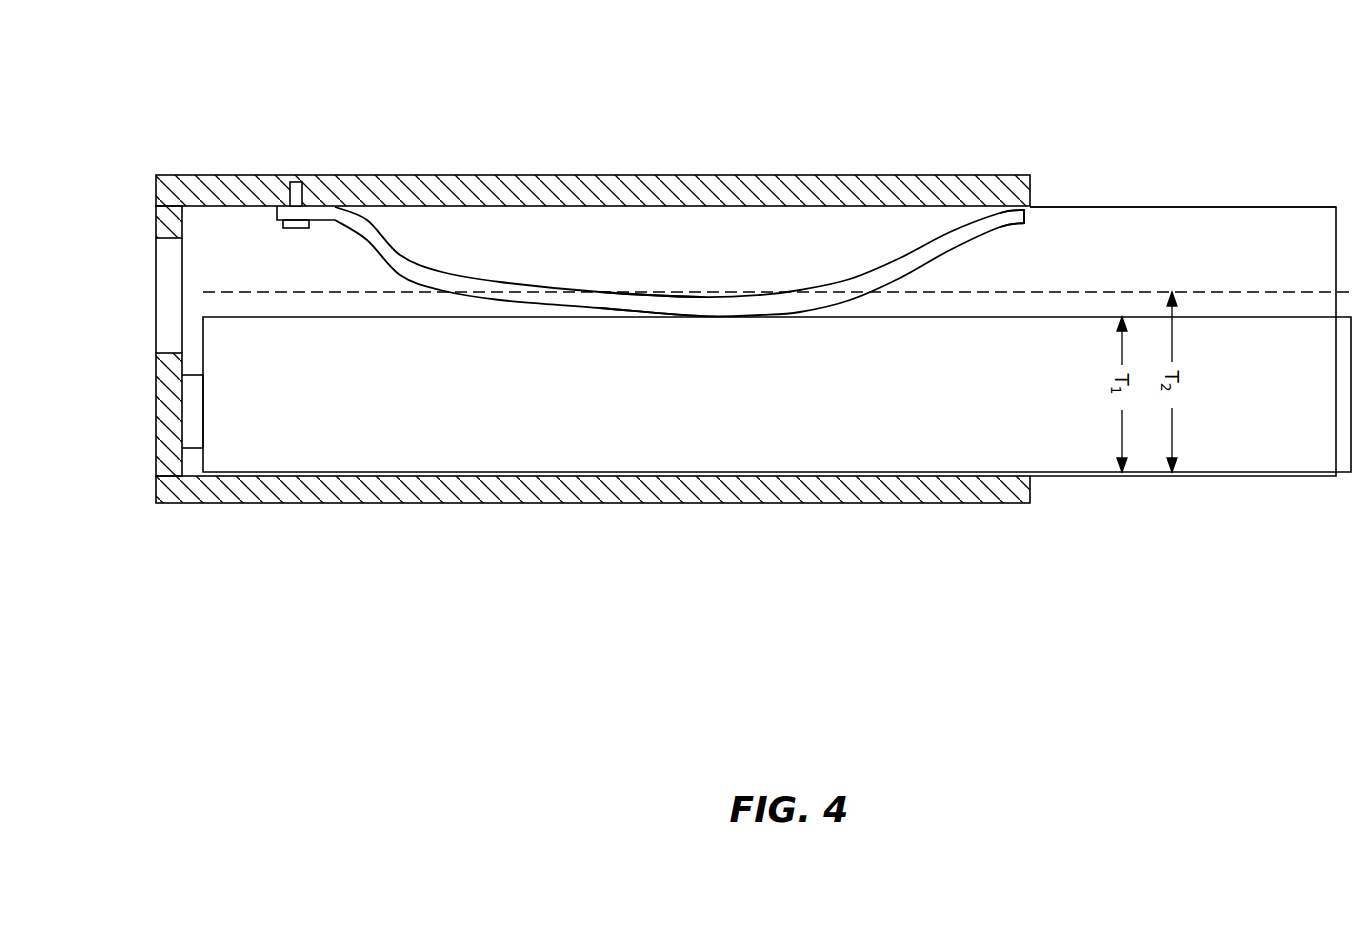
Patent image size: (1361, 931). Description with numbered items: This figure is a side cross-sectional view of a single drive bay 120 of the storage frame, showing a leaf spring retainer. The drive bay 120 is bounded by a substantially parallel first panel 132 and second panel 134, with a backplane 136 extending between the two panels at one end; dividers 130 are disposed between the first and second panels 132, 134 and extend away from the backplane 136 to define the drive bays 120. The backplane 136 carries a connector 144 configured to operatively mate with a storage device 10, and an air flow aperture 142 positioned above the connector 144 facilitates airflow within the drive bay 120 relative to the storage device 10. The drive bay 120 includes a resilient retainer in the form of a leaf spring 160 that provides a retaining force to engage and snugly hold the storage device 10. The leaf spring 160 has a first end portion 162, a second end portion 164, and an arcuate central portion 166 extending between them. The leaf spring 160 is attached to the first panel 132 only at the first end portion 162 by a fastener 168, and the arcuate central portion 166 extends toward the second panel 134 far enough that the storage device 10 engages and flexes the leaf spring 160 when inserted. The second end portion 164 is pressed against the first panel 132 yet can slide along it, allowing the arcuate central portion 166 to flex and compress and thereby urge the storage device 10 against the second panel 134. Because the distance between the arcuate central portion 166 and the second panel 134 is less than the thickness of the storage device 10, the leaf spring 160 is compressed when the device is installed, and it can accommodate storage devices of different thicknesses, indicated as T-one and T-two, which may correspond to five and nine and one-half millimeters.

The storage device 10 is at (1295, 438).
The drive bay 120 is at (1052, 242).
The divider 130 is at (1297, 215).
The first panel 132 is at (793, 172).
The second panel 134 is at (597, 503).
The backplane 136 is at (158, 408).
The air flow aperture 142 is at (158, 273).
The connector 144 is at (187, 437).
The leaf spring 160 is at (442, 272).
The first end portion 162 is at (313, 240).
The second end portion 164 is at (1005, 233).
The arcuate central portion 166 is at (623, 283).
The fastener 168 is at (298, 183).